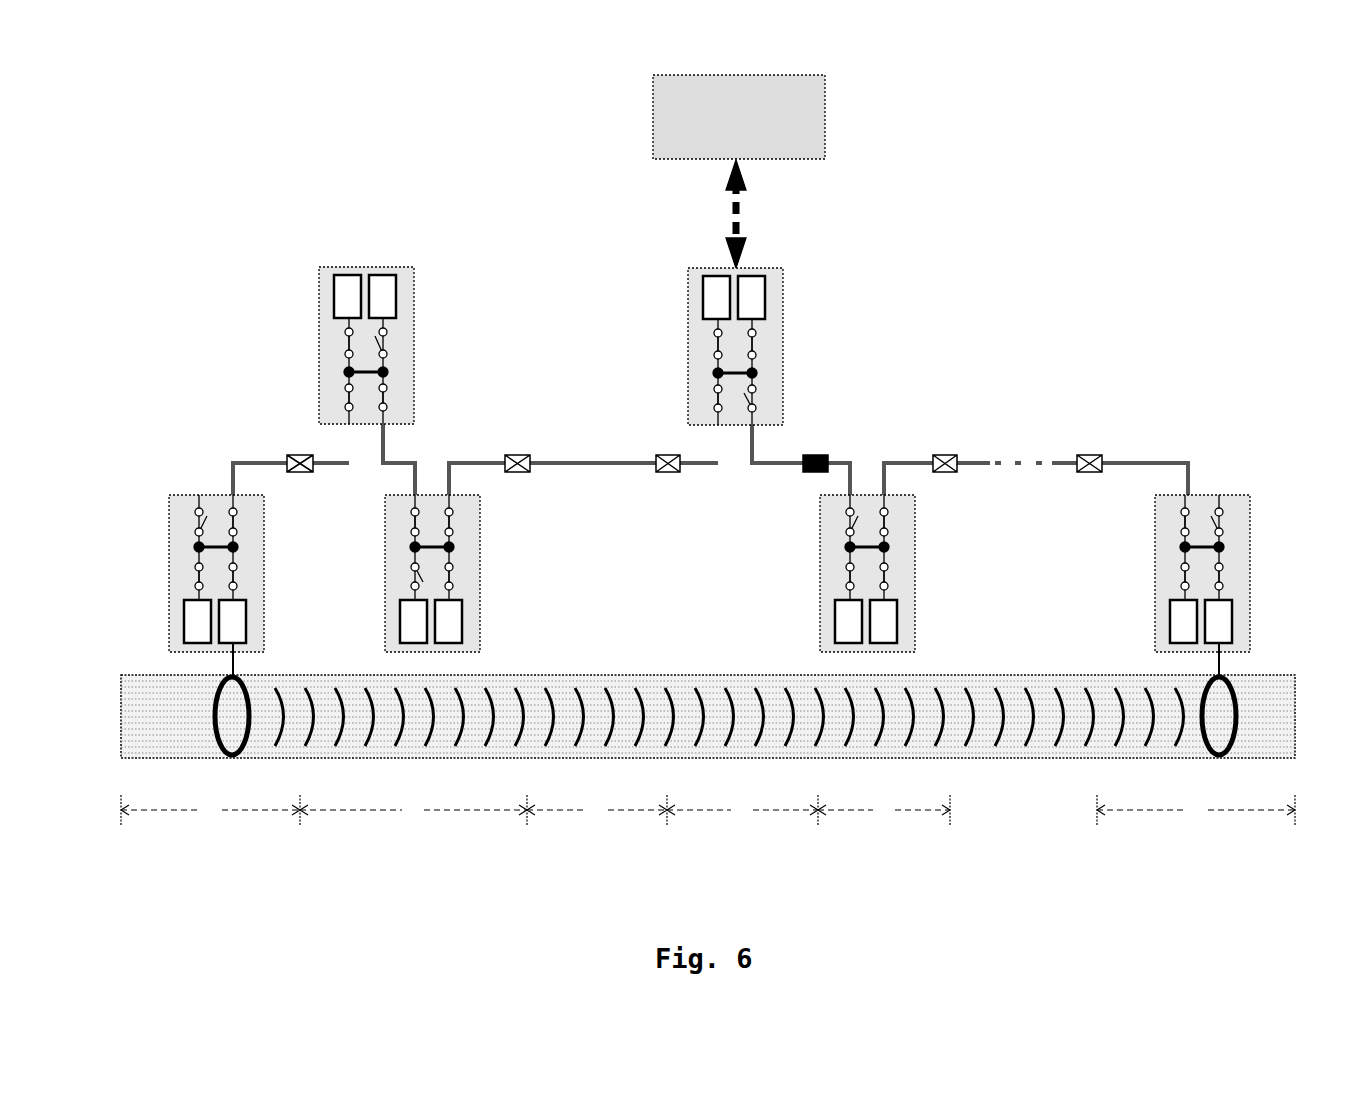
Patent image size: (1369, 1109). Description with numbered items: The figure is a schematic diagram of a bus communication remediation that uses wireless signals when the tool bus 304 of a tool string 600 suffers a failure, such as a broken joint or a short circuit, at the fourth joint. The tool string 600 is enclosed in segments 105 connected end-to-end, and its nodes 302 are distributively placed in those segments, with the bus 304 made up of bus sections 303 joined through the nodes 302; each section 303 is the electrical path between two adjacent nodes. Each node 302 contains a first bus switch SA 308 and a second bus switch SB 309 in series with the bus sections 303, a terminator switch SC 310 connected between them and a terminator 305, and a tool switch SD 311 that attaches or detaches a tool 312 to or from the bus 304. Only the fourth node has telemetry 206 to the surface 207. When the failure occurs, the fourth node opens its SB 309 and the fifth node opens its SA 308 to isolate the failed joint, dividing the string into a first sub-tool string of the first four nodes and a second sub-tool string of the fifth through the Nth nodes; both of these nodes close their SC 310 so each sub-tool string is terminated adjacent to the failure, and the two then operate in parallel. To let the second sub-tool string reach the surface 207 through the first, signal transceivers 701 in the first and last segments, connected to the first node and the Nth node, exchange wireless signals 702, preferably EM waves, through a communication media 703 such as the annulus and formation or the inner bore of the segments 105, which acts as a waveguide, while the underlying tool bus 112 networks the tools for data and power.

The tool string 600 is at (200, 187).
The surface 207 is at (649, 117).
The telemetry 206 is at (727, 217).
The node 302 is at (312, 358).
The bus section 303 is at (456, 481).
The tool bus 304 is at (1196, 460).
The tool bus 112 is at (1092, 441).
The first bus switch (SA) 308 is at (172, 518).
The terminator switch (SC) 310 is at (172, 573).
The terminator 305 is at (172, 625).
The second bus switch (SB) 309 is at (1255, 518).
The tool switch (SD) 311 is at (1255, 572).
The tool 312 is at (1238, 625).
The signal transceiver 701 is at (200, 716).
The wireless signal 702 is at (973, 724).
The communication media 703 is at (137, 749).
The segment 105 is at (1224, 801).